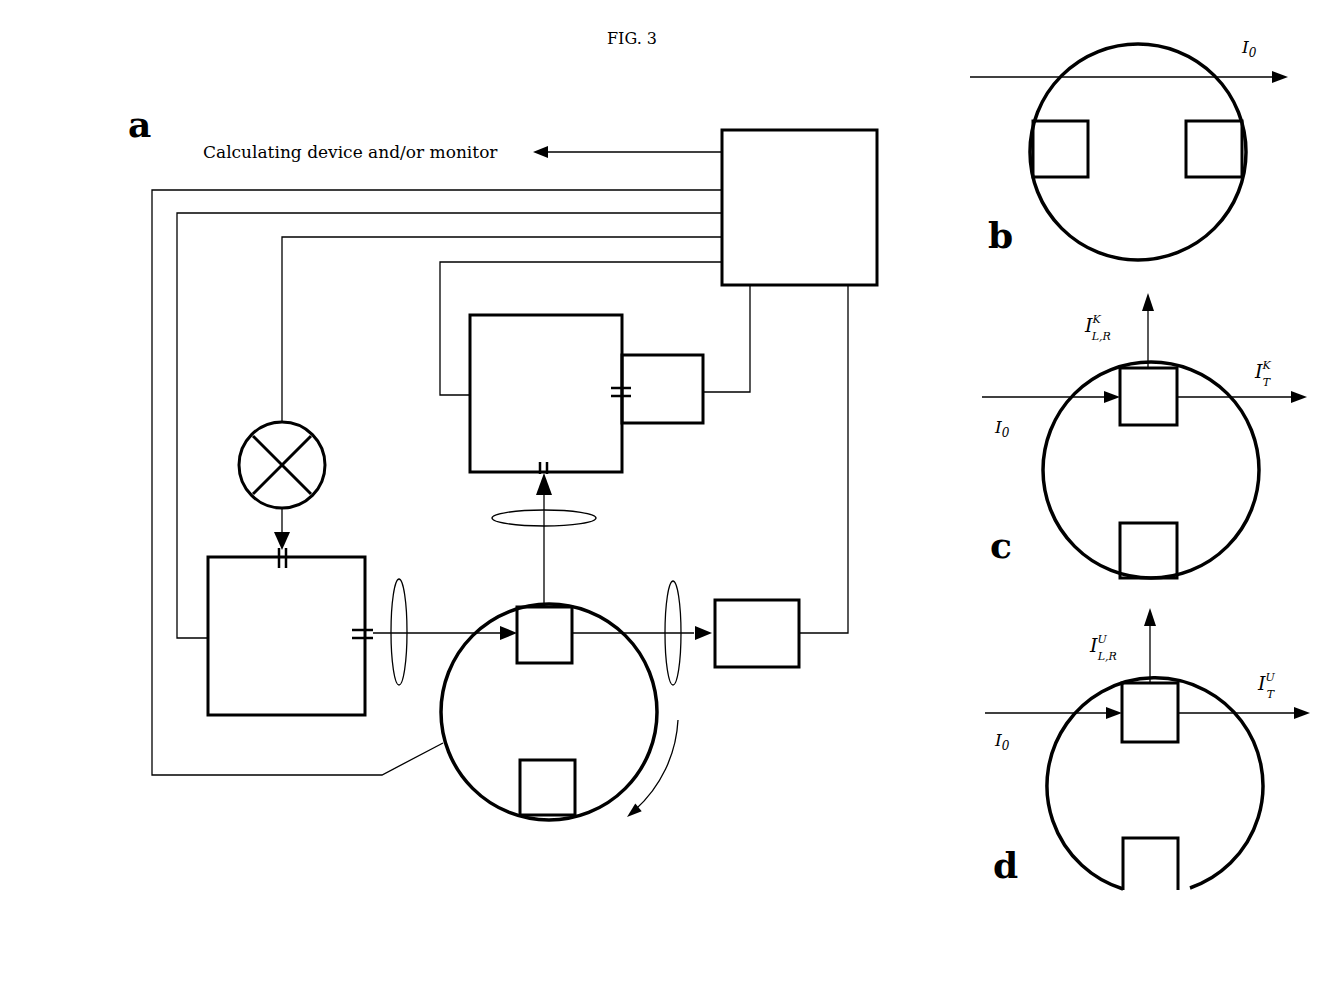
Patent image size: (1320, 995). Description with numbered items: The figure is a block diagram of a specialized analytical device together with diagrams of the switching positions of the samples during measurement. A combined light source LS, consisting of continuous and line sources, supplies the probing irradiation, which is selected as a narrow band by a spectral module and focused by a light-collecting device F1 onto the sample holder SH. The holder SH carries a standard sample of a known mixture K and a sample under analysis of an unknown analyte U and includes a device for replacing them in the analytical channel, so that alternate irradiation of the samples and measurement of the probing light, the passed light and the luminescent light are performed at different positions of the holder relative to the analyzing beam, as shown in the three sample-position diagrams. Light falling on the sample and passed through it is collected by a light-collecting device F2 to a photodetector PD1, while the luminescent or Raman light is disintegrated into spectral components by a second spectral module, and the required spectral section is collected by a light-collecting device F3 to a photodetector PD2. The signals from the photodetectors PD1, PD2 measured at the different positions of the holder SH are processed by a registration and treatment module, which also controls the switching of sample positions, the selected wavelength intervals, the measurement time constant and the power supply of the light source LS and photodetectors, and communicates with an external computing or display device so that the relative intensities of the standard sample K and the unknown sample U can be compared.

The light source LS is at (292, 461).
The device of focusing the probing ray F1 is at (401, 615).
The device for collecting the probing light and the passed light F2 is at (671, 615).
The device for collecting the luminescent light or the Raman scattering F3 is at (559, 520).
The holder of samples SH is at (550, 712).
The standard sample of a known mixture K is at (879, 505).
The sample under analysis of an unknown analyte U is at (849, 468).
The photodetector device for measuring the probing light and the passed light PD1 is at (757, 633).
The photodetector device for measuring the luminescent light or the Raman scattering PD2 is at (662, 389).